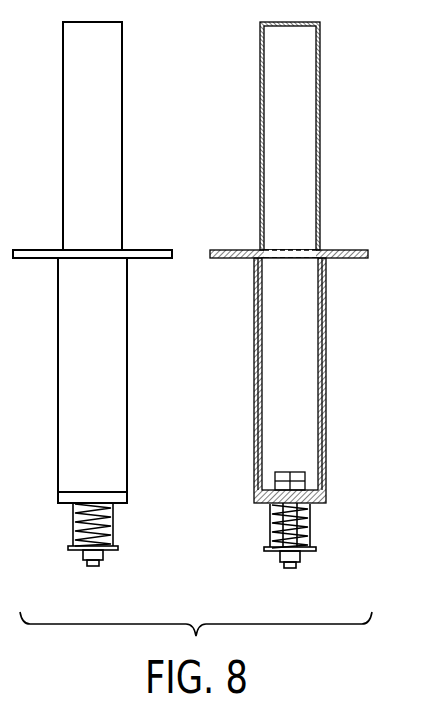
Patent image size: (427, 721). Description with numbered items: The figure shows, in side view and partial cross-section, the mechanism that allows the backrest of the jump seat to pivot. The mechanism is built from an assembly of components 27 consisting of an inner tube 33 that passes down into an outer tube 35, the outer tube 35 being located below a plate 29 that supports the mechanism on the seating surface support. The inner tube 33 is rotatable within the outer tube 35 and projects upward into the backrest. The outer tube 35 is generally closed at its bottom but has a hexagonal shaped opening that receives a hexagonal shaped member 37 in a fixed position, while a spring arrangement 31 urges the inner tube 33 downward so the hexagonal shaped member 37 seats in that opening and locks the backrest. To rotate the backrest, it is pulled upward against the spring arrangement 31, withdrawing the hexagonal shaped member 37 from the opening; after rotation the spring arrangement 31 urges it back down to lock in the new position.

The assembly of components 27 is at (308, 295).
The plate 29 is at (355, 258).
The spring arrangement 31 is at (308, 520).
The inner tube 33 is at (320, 117).
The outer tube 35 is at (325, 343).
The hexagonal shaped member 37 is at (305, 482).